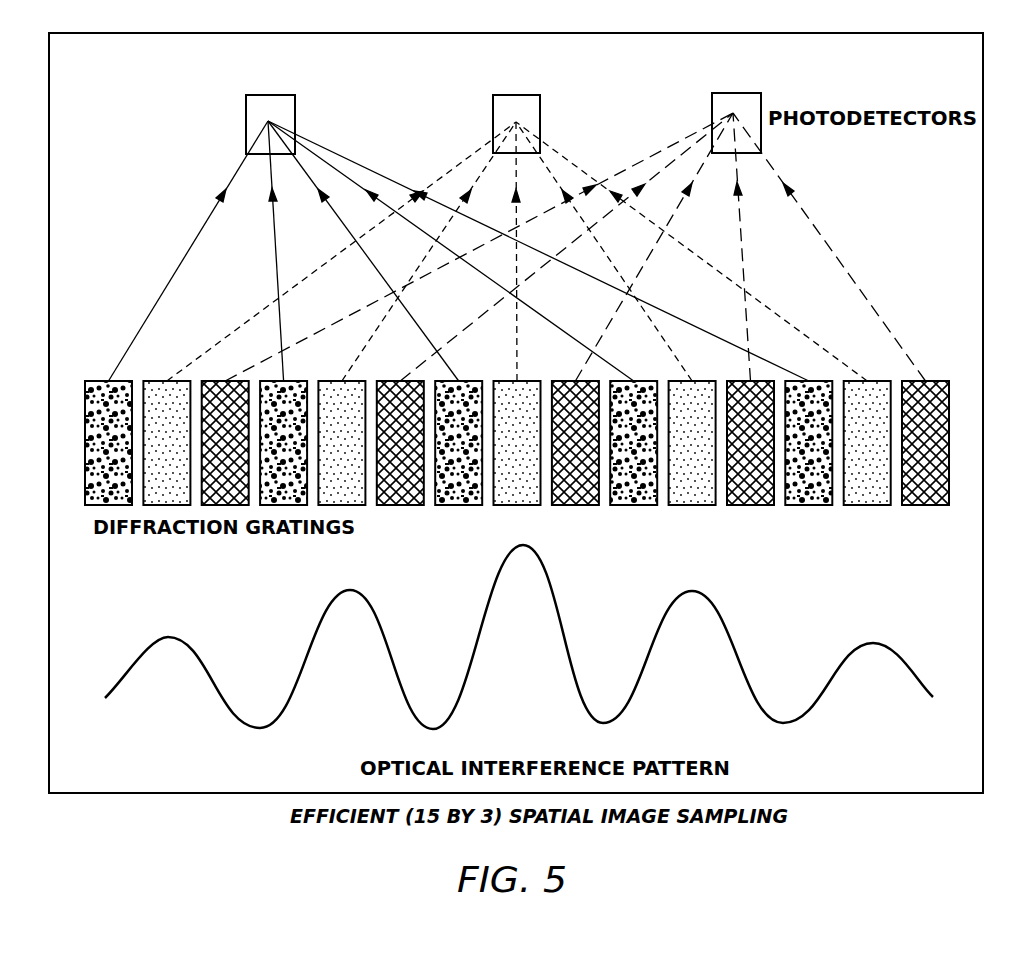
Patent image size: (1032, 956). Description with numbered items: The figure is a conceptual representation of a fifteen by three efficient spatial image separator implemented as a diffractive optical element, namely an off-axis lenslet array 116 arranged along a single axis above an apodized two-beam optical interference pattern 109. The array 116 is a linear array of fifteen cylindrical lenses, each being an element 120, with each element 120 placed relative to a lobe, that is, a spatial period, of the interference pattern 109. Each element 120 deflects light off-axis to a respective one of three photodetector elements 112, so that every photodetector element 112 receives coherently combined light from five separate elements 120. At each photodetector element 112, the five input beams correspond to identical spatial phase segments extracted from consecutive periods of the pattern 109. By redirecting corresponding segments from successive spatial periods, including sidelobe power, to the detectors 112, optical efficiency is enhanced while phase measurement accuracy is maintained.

The optical interference pattern 109 is at (900, 658).
The photodetector element 112 is at (295, 128).
The off-axis lenslet array 116 is at (550, 473).
The element of the array 120 is at (416, 505).